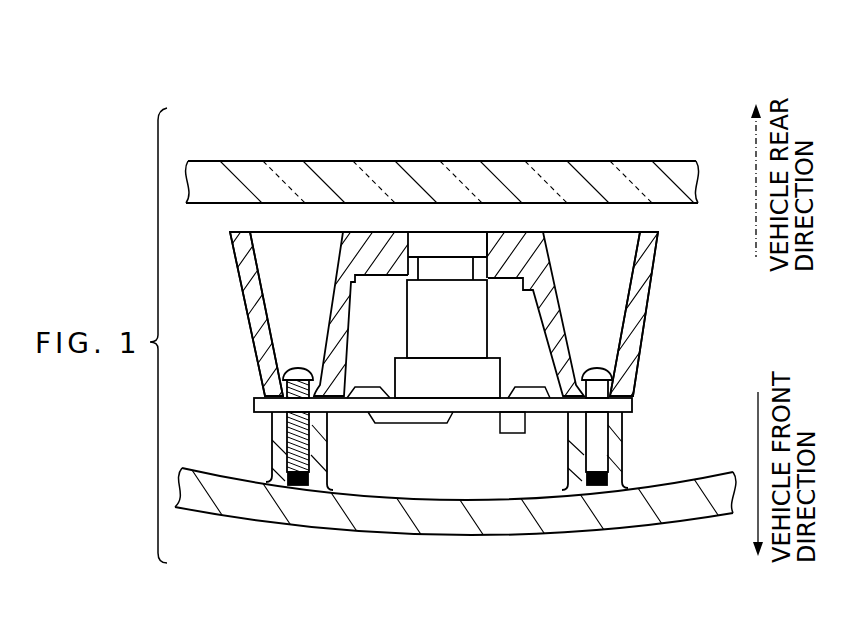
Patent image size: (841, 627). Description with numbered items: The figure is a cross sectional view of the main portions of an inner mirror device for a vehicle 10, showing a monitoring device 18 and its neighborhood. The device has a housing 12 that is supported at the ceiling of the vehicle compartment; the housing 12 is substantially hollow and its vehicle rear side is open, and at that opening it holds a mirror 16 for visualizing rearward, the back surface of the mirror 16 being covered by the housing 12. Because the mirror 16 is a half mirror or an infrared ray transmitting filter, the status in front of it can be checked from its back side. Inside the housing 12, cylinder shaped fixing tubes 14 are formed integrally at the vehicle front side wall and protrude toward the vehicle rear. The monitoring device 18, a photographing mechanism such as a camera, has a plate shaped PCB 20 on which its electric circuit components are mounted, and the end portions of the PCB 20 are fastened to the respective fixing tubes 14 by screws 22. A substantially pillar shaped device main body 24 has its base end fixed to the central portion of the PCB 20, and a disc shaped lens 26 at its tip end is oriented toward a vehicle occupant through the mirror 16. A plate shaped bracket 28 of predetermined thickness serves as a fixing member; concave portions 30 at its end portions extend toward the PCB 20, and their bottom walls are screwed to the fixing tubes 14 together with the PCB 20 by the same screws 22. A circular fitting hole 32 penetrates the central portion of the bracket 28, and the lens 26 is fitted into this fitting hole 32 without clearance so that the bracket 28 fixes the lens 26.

The inner mirror device for a vehicle 10 is at (398, 82).
The housing 12 is at (247, 526).
The fixing tube 14 is at (272, 440).
The mirror 16 is at (248, 160).
The monitoring device 18 is at (403, 330).
The PCB 20 is at (466, 413).
The screw 22 is at (300, 366).
The device main body 24 is at (488, 318).
The lens 26 is at (449, 238).
The bracket 28 is at (372, 228).
The concave portion 30 is at (252, 297).
The fitting hole 32 is at (478, 242).